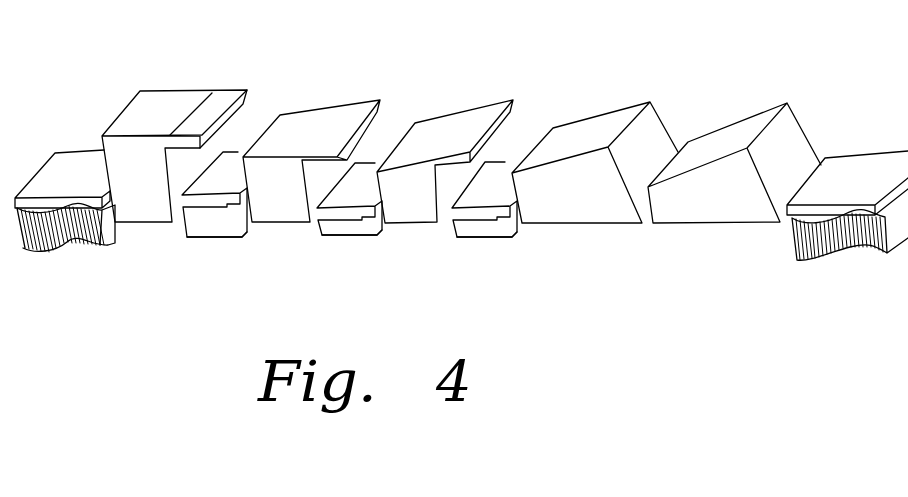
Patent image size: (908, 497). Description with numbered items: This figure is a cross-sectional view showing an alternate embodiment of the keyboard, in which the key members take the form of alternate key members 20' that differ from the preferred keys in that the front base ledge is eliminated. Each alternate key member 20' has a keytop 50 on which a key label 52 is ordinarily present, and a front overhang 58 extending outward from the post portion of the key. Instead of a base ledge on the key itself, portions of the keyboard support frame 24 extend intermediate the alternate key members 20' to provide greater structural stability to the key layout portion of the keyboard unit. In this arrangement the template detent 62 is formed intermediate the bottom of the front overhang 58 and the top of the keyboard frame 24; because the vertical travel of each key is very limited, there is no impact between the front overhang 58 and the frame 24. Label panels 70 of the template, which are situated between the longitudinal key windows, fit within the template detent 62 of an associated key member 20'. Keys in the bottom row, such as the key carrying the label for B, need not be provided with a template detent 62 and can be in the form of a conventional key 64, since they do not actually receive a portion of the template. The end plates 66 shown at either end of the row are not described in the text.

The alternate key member 20' is at (241, 111).
The keyboard support frame 24 is at (50, 253).
The keytop 50 is at (456, 121).
The key label 52 is at (163, 110).
The front overhang 58 is at (218, 98).
The template detent 62 is at (568, 108).
The conventional key 64 is at (730, 122).
The end plate 66 is at (62, 175).
The label panel 70 is at (450, 217).